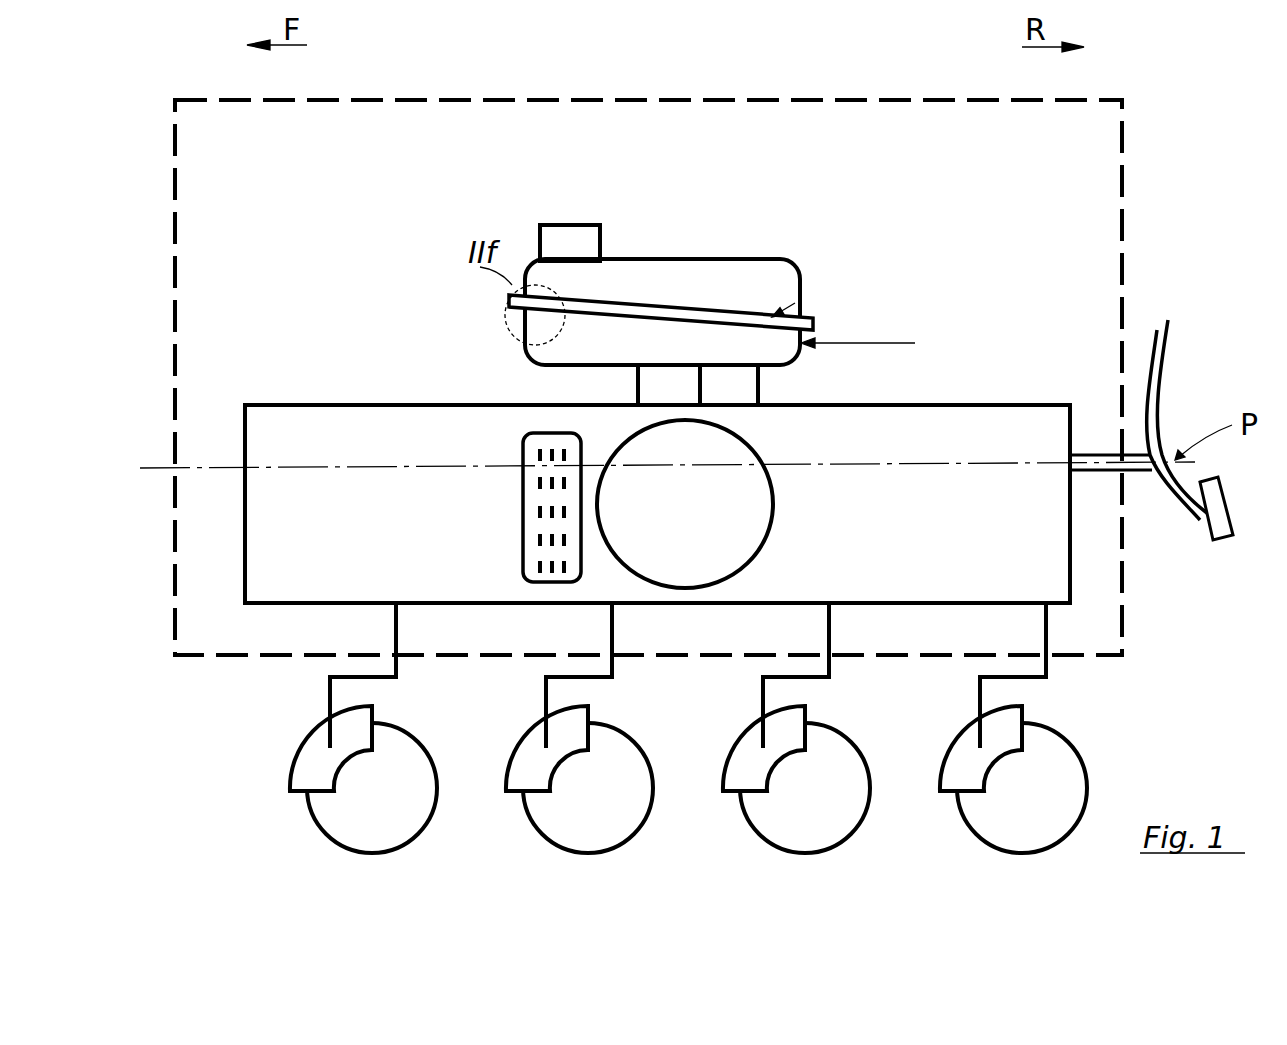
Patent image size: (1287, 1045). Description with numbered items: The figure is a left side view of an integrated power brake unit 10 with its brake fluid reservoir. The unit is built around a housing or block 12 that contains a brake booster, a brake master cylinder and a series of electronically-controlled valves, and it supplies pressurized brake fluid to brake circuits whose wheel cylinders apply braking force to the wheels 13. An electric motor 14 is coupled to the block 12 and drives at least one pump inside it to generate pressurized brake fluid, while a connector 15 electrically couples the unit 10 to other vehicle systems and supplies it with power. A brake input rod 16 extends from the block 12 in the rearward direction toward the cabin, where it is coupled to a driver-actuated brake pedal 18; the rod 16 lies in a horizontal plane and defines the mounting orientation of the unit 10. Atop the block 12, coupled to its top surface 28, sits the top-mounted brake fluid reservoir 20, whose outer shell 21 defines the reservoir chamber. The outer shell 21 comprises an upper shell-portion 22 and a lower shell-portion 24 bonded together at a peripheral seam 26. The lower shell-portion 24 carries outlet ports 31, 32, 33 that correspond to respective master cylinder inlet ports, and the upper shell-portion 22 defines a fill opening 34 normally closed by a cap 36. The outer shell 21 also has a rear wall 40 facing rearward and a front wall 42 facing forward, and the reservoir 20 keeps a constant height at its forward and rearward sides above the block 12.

The integrated power brake unit 10 is at (1128, 108).
The block 12 is at (312, 525).
The wheels 13 is at (300, 738).
The electric motor 14 is at (690, 515).
The connector 15 is at (520, 487).
The brake input rod 16 is at (1098, 470).
The brake pedal 18 is at (1165, 400).
The brake fluid reservoir 20 is at (735, 302).
The outer shell 21 is at (714, 322).
The upper shell-portion 22 is at (808, 277).
The lower shell-portion 24 is at (803, 352).
The peripheral seam 26 is at (808, 310).
The top surface 28 is at (375, 402).
The outlet port 31 is at (634, 388).
The outlet port 32 is at (703, 390).
The outlet port 33 is at (762, 387).
The fill opening 34 is at (640, 222).
The cap 36 is at (604, 238).
The rear wall 40 is at (879, 344).
The front wall 42 is at (505, 324).